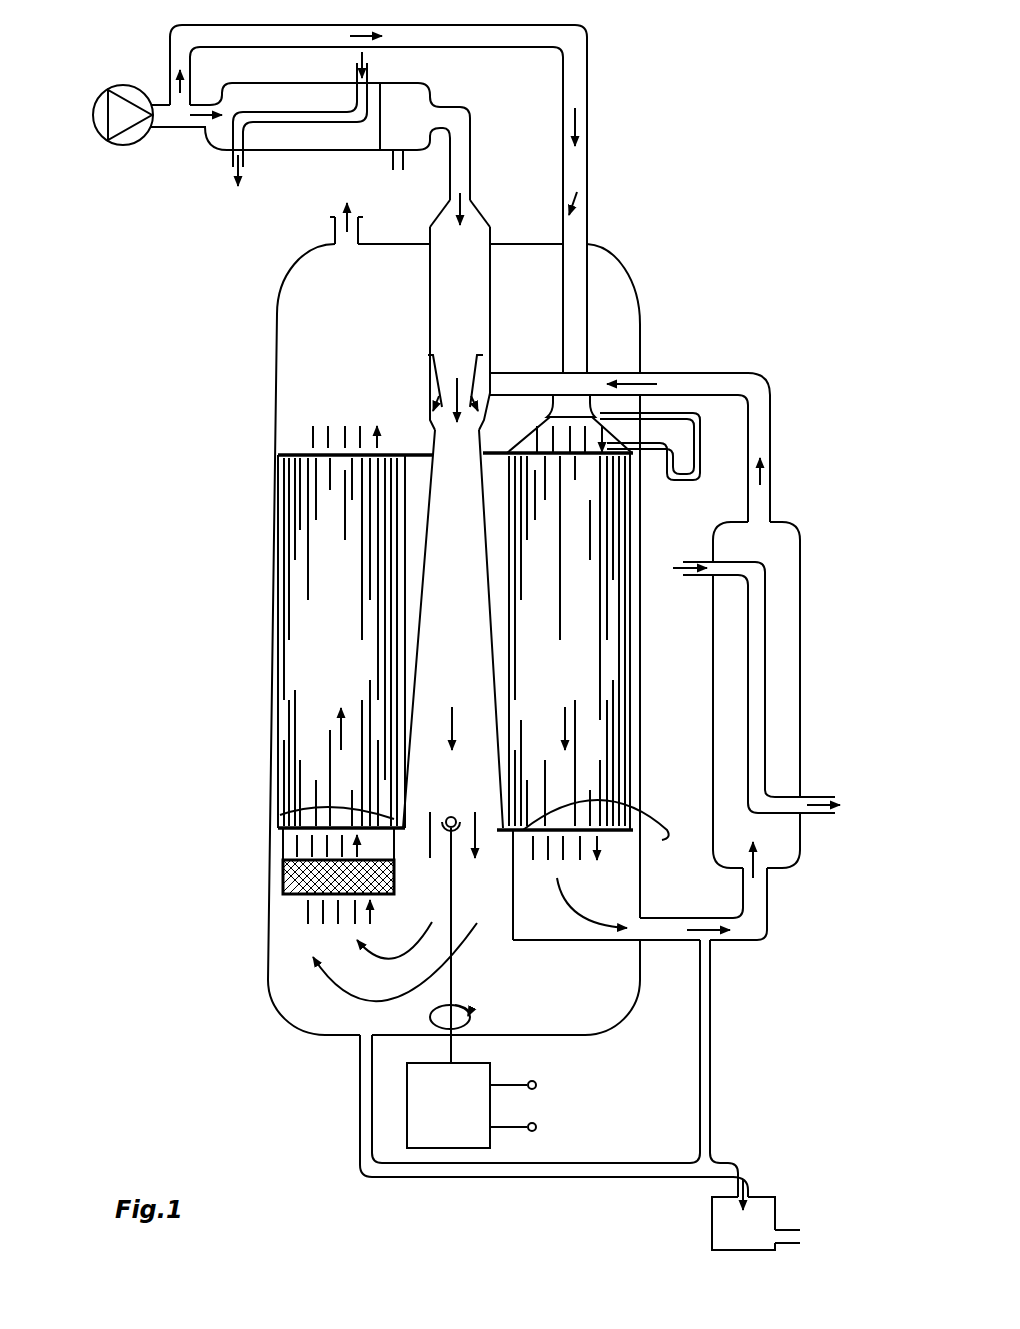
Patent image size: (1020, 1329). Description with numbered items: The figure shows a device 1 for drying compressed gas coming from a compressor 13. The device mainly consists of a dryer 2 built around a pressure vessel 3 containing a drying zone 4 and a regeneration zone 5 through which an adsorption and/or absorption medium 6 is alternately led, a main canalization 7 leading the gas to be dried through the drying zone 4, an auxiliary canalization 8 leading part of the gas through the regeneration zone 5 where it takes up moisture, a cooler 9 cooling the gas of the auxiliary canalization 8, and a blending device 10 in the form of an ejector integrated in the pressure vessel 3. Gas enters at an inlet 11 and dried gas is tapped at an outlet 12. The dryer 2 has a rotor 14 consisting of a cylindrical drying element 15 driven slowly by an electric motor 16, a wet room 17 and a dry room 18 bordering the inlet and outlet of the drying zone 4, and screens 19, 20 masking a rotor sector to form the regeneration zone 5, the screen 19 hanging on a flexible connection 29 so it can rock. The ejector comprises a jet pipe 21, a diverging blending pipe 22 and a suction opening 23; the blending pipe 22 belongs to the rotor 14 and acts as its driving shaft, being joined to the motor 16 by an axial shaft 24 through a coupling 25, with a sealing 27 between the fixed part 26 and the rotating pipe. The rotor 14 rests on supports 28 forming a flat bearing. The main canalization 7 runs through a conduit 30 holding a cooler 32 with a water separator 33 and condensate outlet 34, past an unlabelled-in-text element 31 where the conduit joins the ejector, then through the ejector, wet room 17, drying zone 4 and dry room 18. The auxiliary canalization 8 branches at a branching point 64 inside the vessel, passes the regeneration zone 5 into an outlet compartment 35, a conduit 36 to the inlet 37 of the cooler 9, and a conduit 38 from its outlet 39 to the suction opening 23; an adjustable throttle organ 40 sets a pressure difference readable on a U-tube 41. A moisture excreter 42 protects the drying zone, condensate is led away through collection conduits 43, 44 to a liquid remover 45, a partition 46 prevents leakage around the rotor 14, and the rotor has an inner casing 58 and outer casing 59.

The device 1 is at (175, 1015).
The dryer 2 is at (208, 266).
The pressure vessel 3 is at (641, 287).
The drying zone 4 is at (308, 640).
The regeneration zone 5 is at (592, 647).
The adsorption and/or absorption medium 6 is at (301, 672).
The main canalization 7 is at (492, 262).
The auxiliary canalization 8 is at (592, 230).
The cooler 9 is at (802, 624).
The blending device 10 is at (425, 432).
The inlet 11 is at (163, 130).
The outlet 12 is at (333, 231).
The compressor 13 is at (127, 85).
The rotor 14 is at (278, 555).
The cylindrical drying element 15 is at (325, 510).
The electric motor 16 is at (413, 1103).
The wet room 17 is at (586, 1028).
The dry room 18 is at (630, 323).
The screen 19 is at (607, 427).
The screen 20 is at (600, 943).
The jet pipe 21 is at (440, 398).
The blending pipe 22 is at (497, 520).
The suction opening 23 is at (482, 420).
The axial shaft 24 is at (460, 993).
The coupling 25 is at (443, 808).
The fixed part of the ejector 26 is at (428, 262).
The sealing 27 is at (425, 418).
The supports 28 is at (280, 815).
The flexible connection 29 is at (603, 393).
The conduit 30 is at (465, 117).
The pipe flare 31 is at (446, 205).
The cooler 32 is at (300, 148).
The water separator 33 is at (420, 94).
The condensate outlet 34 is at (393, 163).
The outlet compartment 35 is at (627, 890).
The conduit 36 is at (748, 940).
The inlet of the cooler 37 is at (776, 870).
The conduit 38 is at (768, 403).
The outlet of the cooler 39 is at (795, 492).
The adjustable throttle organ 40 is at (577, 208).
The U-tube 41 is at (707, 437).
The moisture excreter 42 is at (283, 876).
The collection conduit 43 is at (700, 1055).
The collection conduit 44 is at (614, 1164).
The liquid remover 45 is at (763, 1200).
The partition 46 is at (276, 478).
The inner casing 58 is at (512, 658).
The outer casing 59 is at (633, 697).
The branching point 64 is at (187, 132).